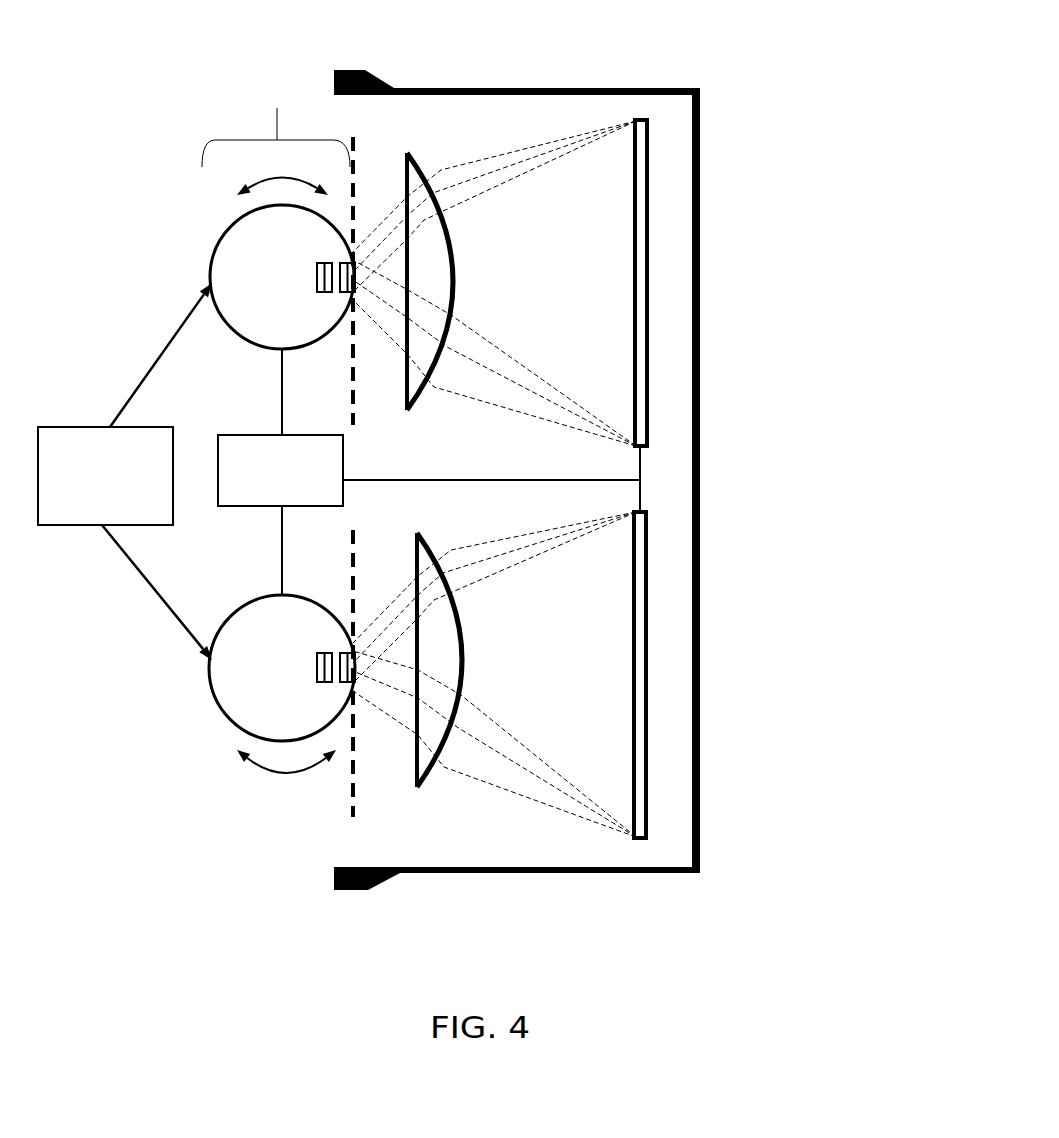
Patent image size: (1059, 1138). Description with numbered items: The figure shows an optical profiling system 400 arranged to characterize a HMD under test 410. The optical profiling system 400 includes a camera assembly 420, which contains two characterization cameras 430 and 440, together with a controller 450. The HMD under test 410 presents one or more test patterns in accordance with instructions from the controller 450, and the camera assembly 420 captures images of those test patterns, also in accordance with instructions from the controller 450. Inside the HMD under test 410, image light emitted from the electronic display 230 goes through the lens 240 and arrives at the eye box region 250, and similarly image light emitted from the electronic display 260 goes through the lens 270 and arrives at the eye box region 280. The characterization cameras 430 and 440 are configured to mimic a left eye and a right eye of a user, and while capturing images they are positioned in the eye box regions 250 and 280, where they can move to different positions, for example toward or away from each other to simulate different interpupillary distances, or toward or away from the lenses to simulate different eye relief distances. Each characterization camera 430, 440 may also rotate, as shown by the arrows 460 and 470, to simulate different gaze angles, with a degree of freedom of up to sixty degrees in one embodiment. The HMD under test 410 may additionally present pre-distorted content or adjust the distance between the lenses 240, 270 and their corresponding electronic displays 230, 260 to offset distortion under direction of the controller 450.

The optical profiling system 400 is at (292, 71).
The HMD under test 410 is at (669, 78).
The electronic display 230 is at (662, 190).
The lens 240 is at (466, 265).
The eye box region 250 is at (360, 376).
The electronic display 260 is at (661, 603).
The lens 270 is at (474, 676).
The eye box region 280 is at (334, 806).
The camera assembly 420 is at (85, 515).
The characterization camera 430 is at (295, 304).
The characterization camera 440 is at (295, 694).
The controller 450 is at (260, 498).
The arrow 460 is at (192, 210).
The arrow 470 is at (192, 768).